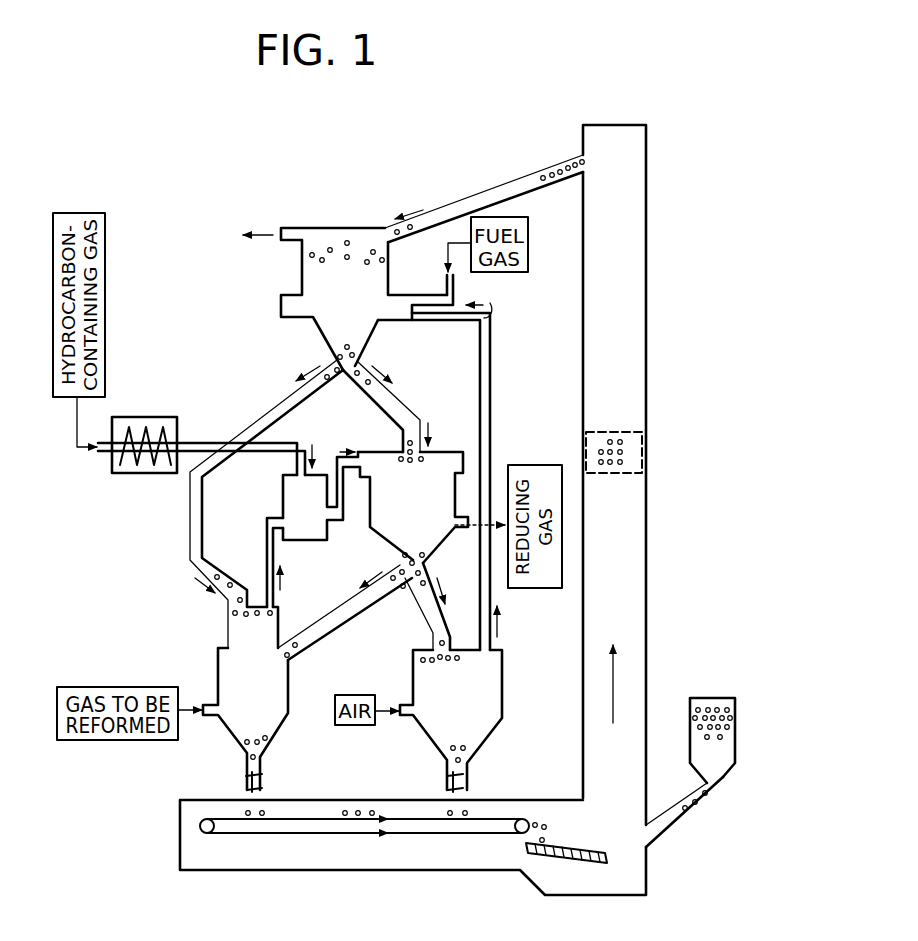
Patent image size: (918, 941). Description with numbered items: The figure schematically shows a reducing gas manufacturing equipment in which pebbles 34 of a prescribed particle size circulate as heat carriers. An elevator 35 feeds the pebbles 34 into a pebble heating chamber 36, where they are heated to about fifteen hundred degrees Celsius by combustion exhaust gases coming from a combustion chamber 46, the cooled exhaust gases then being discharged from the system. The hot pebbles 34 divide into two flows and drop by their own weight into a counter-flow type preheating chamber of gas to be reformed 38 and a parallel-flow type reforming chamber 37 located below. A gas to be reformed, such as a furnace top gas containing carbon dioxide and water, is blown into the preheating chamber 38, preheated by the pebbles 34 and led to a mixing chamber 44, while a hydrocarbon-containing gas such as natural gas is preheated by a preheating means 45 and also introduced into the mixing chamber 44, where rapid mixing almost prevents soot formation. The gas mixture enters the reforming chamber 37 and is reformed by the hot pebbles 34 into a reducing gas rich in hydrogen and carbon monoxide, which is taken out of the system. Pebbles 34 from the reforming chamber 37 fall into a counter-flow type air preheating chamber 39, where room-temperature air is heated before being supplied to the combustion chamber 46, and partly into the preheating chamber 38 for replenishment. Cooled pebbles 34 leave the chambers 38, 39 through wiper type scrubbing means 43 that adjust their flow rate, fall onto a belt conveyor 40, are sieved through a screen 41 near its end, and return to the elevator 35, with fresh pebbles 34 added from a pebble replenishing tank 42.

The pebbles 34 is at (350, 214).
The elevator 35 is at (640, 468).
The pebble heating chamber 36 is at (412, 273).
The parallel-flow type reforming chamber 37 is at (440, 513).
The counter-flow type preheating chamber of gas to be reformed 38 is at (280, 676).
The counter-flow type air preheating chamber 39 is at (478, 728).
The belt conveyor 40 is at (428, 836).
The screen 41 is at (600, 849).
The pebble replenishing tank 42 is at (717, 773).
The wiper type scrubbing means 43 is at (264, 775).
The mixing chamber 44 is at (313, 530).
The preheating means 45 is at (152, 417).
The combustion chamber 46 is at (398, 313).